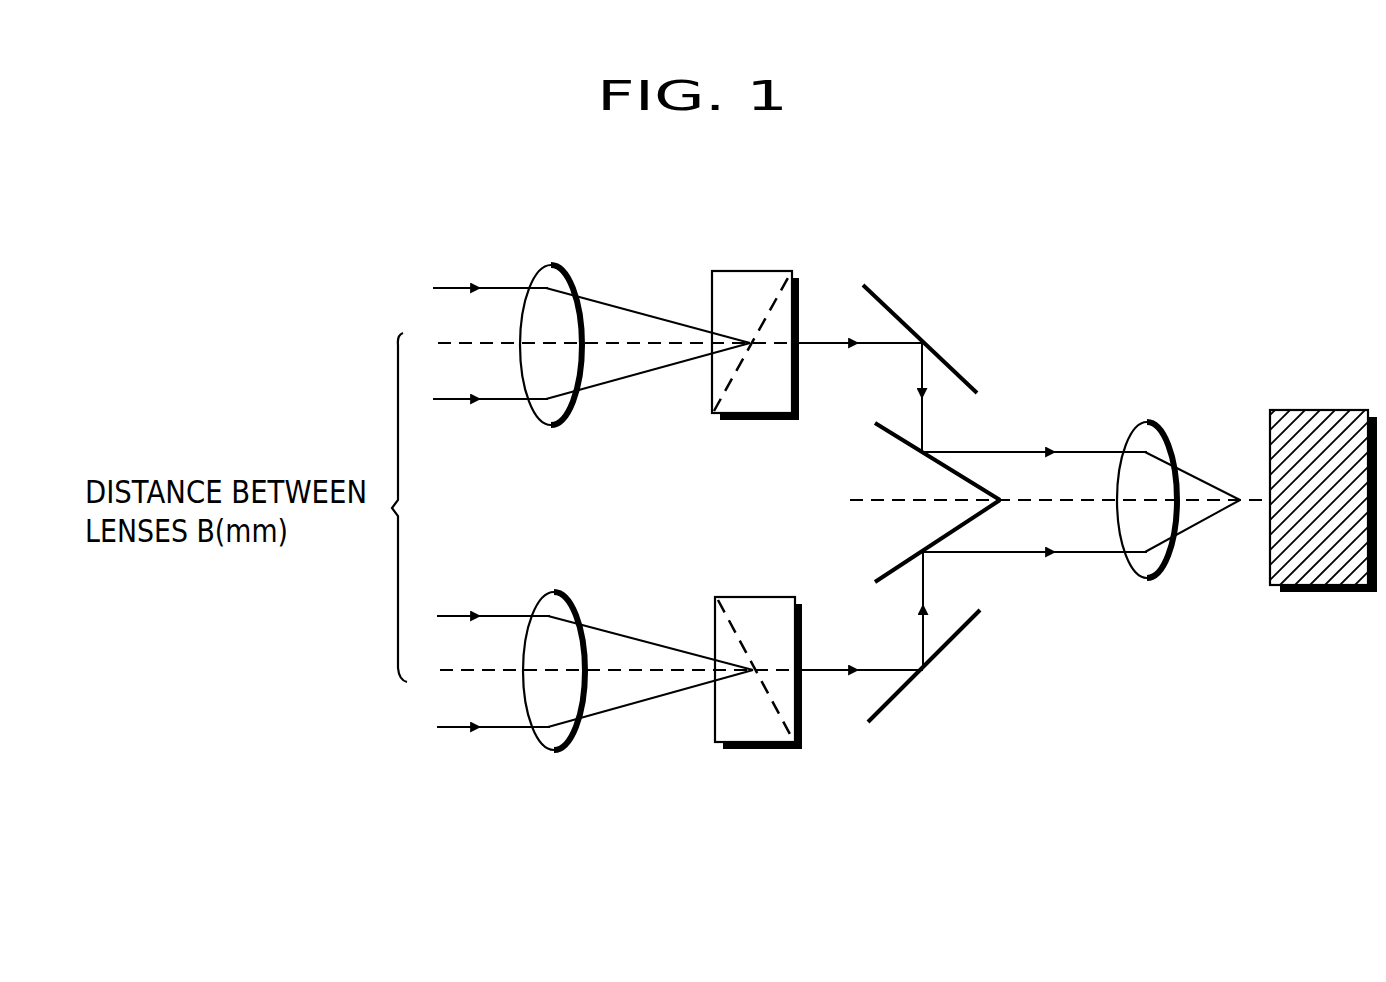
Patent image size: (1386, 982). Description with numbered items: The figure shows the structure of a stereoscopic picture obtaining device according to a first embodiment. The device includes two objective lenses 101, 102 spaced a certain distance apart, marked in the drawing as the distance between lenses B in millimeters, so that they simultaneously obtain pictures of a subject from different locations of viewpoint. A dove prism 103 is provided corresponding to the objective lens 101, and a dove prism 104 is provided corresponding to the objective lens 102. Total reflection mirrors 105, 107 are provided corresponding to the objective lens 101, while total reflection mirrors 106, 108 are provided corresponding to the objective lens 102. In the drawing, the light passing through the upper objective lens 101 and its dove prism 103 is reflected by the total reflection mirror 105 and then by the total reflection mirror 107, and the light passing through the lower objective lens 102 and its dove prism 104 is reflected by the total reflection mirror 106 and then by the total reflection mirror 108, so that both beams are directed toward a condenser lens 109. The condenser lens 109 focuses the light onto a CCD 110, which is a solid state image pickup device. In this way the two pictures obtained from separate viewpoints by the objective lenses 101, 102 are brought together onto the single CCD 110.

The objective lens 101 is at (547, 267).
The objective lens 102 is at (552, 592).
The dove prism 103 is at (755, 268).
The dove prism 104 is at (753, 742).
The total reflection mirror 105 is at (960, 372).
The total reflection mirror 106 is at (953, 637).
The total reflection mirror 107 is at (893, 443).
The total reflection mirror 108 is at (893, 563).
The condenser lens 109 is at (1145, 420).
The CCD 110 is at (1337, 408).